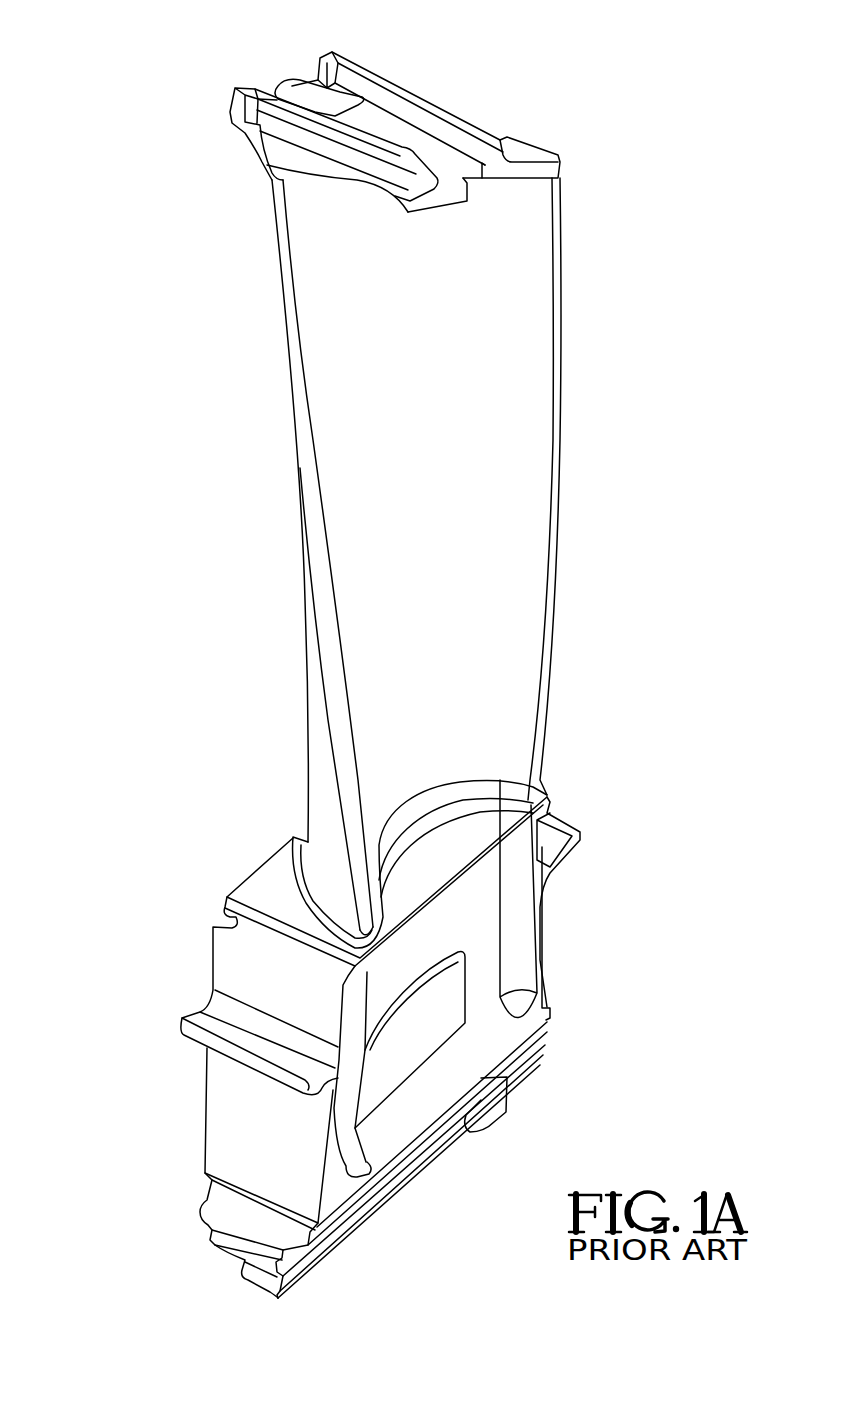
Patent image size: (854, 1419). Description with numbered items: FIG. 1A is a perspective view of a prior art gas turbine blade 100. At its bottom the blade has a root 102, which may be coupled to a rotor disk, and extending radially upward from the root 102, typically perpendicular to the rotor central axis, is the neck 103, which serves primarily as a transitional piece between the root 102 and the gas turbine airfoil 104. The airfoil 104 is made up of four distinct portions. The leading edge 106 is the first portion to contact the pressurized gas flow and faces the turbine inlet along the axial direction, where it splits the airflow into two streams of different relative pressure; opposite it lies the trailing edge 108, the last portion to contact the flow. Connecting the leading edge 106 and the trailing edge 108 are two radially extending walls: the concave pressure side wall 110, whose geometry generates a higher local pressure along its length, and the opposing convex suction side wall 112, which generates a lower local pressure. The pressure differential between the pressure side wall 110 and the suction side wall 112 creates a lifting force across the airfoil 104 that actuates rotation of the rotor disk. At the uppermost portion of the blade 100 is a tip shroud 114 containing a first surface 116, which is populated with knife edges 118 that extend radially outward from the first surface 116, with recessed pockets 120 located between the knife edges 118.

The gas turbine blade 100 is at (338, 650).
The root 102 is at (138, 1158).
The neck 103 is at (145, 875).
The gas turbine airfoil 104 is at (410, 556).
The leading edge 106 is at (308, 503).
The trailing edge 108 is at (555, 485).
The pressure side wall 110 is at (372, 385).
The suction side wall 112 is at (281, 298).
The tip shroud 114 is at (395, 107).
The first surface 116 is at (380, 124).
The knife edges 118 is at (505, 138).
The recessed pockets 120 is at (325, 103).